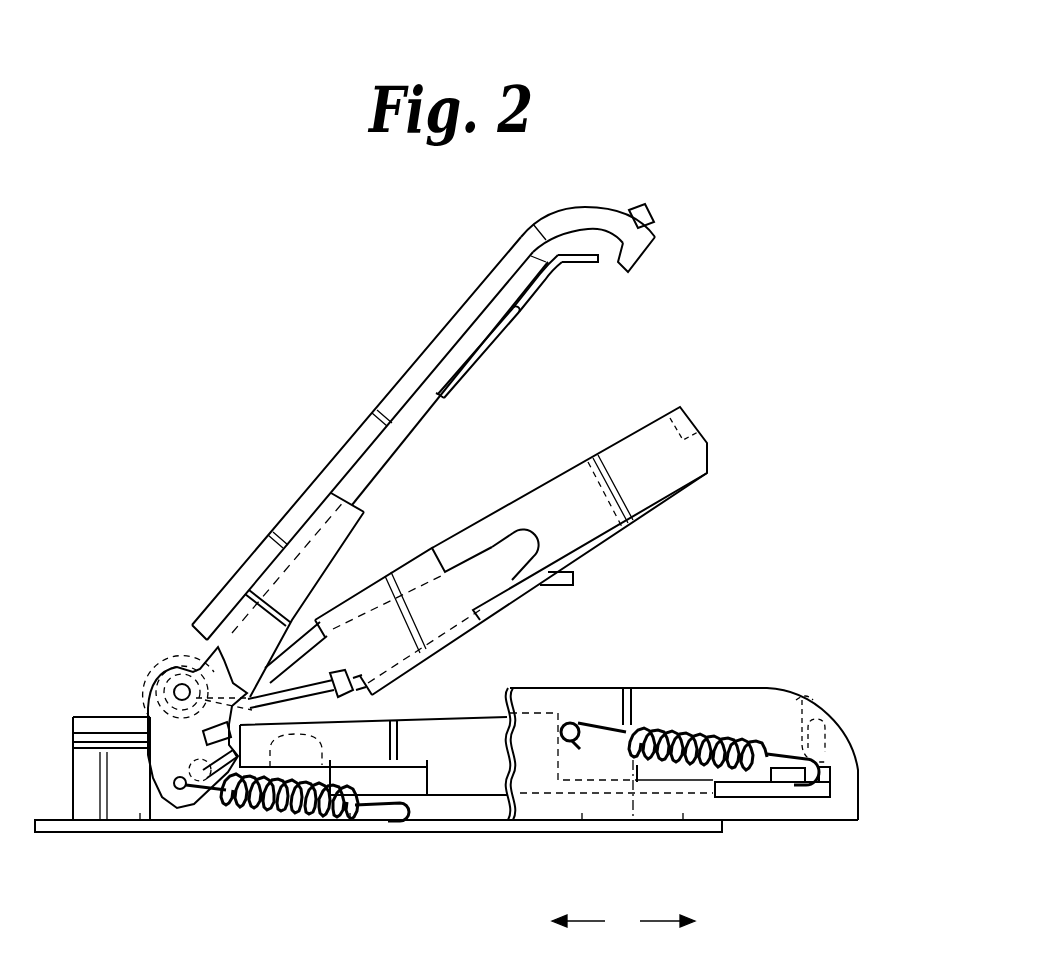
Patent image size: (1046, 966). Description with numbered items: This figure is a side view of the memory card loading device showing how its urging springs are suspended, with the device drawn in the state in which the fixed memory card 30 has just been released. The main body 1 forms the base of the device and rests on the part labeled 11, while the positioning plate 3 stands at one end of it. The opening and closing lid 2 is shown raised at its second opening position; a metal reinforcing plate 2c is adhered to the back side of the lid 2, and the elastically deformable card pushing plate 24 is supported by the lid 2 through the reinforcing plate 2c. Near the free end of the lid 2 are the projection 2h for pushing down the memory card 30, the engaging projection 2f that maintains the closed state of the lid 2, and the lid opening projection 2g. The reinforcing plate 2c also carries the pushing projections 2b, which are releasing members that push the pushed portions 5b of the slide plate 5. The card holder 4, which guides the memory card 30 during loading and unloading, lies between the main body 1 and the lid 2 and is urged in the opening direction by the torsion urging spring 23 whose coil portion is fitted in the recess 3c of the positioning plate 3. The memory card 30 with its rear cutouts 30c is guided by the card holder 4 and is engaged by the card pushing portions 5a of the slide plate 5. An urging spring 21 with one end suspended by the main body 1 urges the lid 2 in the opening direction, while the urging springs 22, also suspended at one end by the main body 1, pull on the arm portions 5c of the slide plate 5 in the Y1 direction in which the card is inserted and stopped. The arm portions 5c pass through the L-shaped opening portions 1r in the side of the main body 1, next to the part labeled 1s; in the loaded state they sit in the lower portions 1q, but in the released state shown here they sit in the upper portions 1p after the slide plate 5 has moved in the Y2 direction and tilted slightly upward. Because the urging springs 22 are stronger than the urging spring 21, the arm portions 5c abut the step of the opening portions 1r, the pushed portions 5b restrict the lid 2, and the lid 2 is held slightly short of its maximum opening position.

The main body 1 is at (813, 702).
The upper portions of the opening portions 1p is at (788, 752).
The lower portions of the opening portions 1q is at (750, 798).
The opening portions 1r is at (784, 798).
The spring hook shaft 1s is at (832, 785).
The opening and closing lid 2 is at (446, 326).
The pushing projections 2b is at (246, 704).
The reinforcing plate 2c is at (392, 443).
The engaging projection 2f is at (630, 268).
The lid opening projection 2g is at (637, 206).
The projection 2h is at (555, 284).
The positioning plate 3 is at (73, 716).
The recess 3c is at (181, 682).
The card holder 4 is at (510, 605).
The slide plate 5 is at (600, 822).
The card pushing portions 5a is at (803, 702).
The pushed portions 5b is at (258, 770).
The arm portions 5c is at (809, 798).
The base plate 11 is at (549, 834).
The urging spring 21 is at (318, 808).
The urging springs 22 is at (665, 730).
The urging spring 23 is at (152, 682).
The card pushing plate 24 is at (585, 262).
The memory card 30 is at (633, 428).
The cutouts 30c is at (692, 419).
The Y1 direction Y1 is at (578, 933).
The Y2 direction Y2 is at (667, 933).